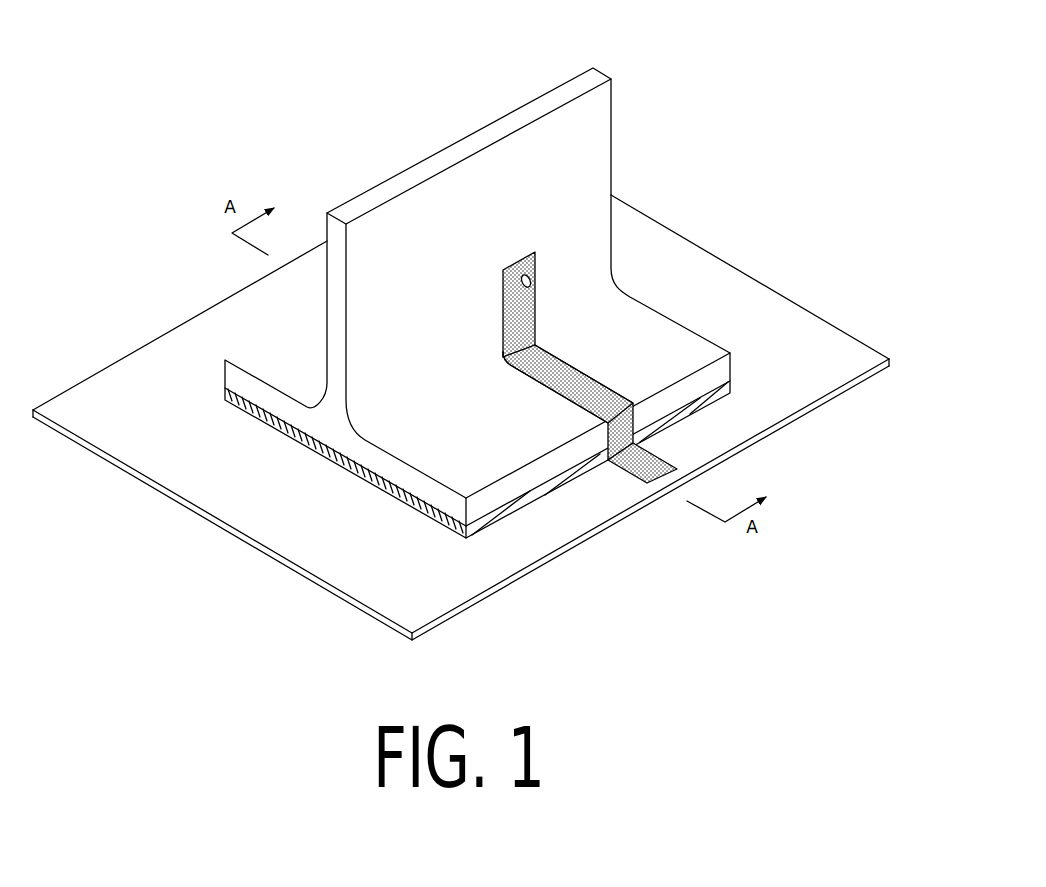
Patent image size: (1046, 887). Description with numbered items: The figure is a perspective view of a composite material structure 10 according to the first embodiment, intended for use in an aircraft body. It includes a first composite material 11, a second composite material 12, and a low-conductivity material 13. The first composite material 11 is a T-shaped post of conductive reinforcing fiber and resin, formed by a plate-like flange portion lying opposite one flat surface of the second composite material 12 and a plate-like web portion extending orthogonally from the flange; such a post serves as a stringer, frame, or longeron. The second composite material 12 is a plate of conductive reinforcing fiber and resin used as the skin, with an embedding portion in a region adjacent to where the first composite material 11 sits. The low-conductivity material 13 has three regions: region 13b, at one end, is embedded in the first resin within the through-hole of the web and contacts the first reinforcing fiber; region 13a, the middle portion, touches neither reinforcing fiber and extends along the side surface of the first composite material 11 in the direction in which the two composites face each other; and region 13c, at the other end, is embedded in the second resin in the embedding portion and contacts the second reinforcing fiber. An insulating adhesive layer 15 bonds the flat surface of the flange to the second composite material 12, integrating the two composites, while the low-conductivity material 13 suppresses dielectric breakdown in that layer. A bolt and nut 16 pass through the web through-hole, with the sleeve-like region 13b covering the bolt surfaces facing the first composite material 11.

The composite material structure 10 is at (672, 57).
The first composite material 11 is at (595, 167).
The second composite material 12 is at (746, 305).
The low-conductivity material 13 is at (647, 347).
The region 13a is at (542, 372).
The region 13b is at (497, 240).
The region 13c is at (644, 481).
The insulating adhesive layer 15 is at (368, 484).
The bolt and nut 16 is at (531, 276).